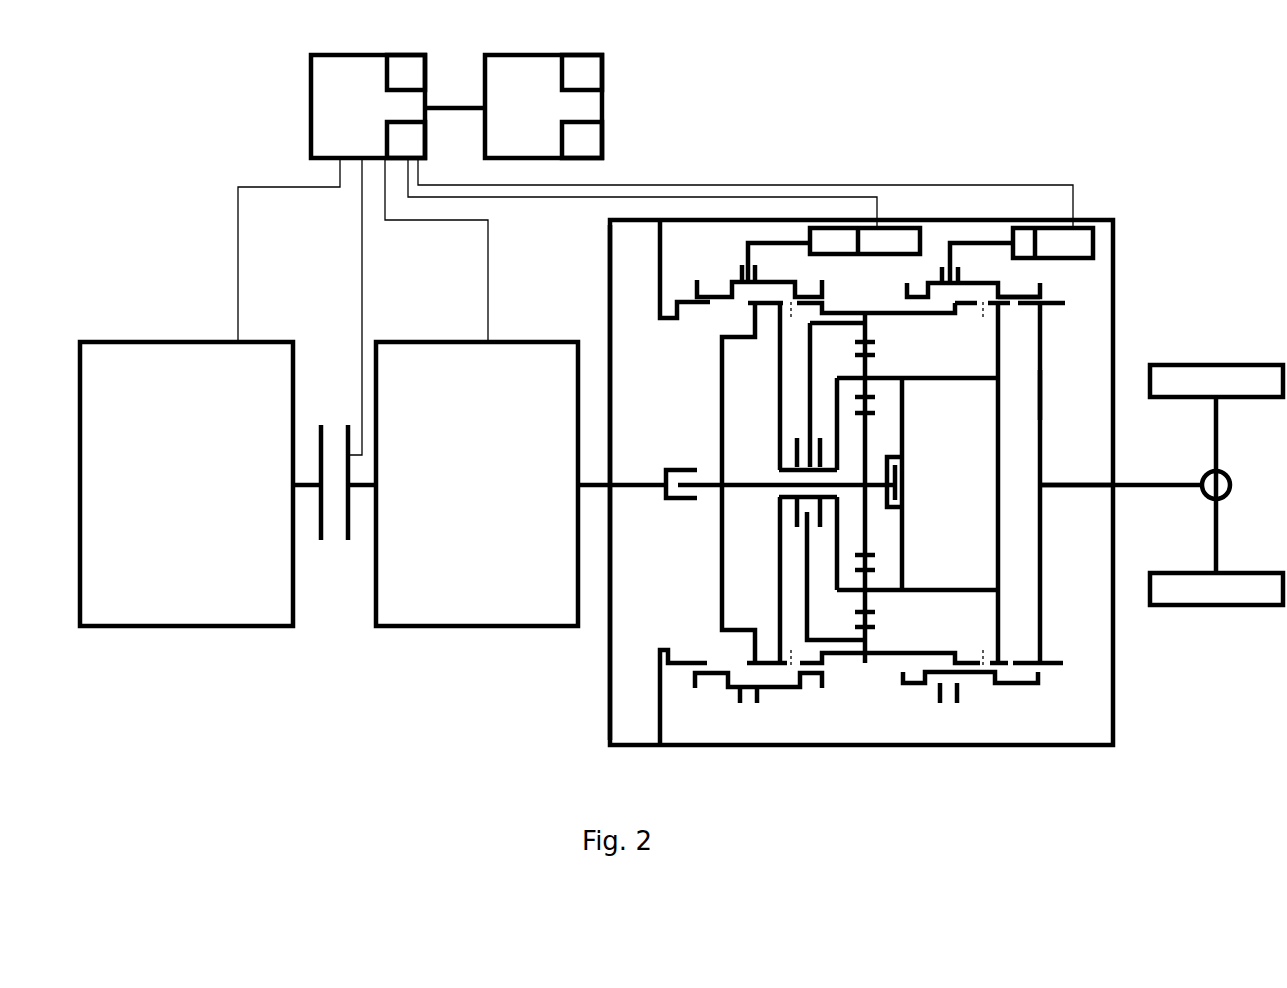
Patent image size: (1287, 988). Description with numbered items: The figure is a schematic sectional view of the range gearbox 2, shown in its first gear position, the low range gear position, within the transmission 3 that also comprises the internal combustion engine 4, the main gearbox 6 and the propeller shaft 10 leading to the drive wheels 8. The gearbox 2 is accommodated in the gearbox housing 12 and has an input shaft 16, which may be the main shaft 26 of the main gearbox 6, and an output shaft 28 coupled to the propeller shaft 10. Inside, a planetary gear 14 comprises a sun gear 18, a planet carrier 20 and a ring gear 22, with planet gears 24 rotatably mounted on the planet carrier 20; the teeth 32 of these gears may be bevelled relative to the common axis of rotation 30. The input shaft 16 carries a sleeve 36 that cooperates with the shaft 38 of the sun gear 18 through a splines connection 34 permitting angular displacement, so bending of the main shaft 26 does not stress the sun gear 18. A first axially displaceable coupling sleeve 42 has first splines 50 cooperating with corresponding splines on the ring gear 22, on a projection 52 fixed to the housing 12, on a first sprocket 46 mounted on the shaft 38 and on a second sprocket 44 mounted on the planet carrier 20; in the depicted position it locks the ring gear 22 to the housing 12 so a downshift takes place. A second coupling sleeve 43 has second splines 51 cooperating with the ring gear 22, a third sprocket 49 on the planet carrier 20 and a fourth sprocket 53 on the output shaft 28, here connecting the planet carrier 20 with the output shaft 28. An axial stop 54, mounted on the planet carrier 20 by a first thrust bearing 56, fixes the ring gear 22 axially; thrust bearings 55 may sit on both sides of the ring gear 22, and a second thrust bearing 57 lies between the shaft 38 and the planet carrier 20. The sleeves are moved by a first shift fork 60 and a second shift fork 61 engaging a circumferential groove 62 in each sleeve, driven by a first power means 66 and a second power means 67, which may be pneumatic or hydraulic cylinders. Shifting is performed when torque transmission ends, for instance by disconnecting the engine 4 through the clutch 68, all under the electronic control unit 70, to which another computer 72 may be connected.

The gearbox 2 is at (890, 150).
The transmission 3 is at (150, 268).
The internal combustion engine 4 is at (181, 628).
The main gearbox 6 is at (476, 628).
The drive wheels 8 is at (1222, 365).
The propeller shaft 10 is at (1128, 485).
The gearbox housing 12 is at (997, 218).
The planetary gear 14 is at (948, 528).
The input shaft 16 is at (597, 490).
The sun gear 18 is at (870, 520).
The planet carrier 20 is at (1002, 395).
The ring gear 22 is at (872, 318).
The planet gears 24 is at (906, 382).
The main shaft 26 is at (606, 470).
The output shaft 28 is at (1092, 487).
The axis of rotation 30 is at (845, 482).
The teeth 32 is at (885, 560).
The splines connection 34 is at (668, 468).
The sleeve 36 is at (662, 490).
The shaft of the sun gear 38 is at (716, 489).
The first axially displaceable coupling sleeve 42 is at (790, 283).
The second axially displaceable coupling sleeve 43 is at (1042, 292).
The second sprocket 44 is at (778, 378).
The first sprocket 46 is at (722, 580).
The third sprocket 49 is at (1043, 352).
The first splines 50 is at (823, 670).
The second splines 51 is at (1012, 662).
The projection 52 is at (660, 292).
The fourth sprocket 53 is at (1043, 380).
The axial stop 54 is at (834, 368).
The thrust bearings 55 is at (792, 308).
The first thrust bearing 56 is at (800, 522).
The second thrust bearing 57 is at (902, 460).
The first shift fork 60 is at (748, 260).
The second shift fork 61 is at (948, 265).
The circumferential groove 62 is at (750, 700).
The first power means 66 is at (893, 228).
The second power means 67 is at (1095, 248).
The clutch 68 is at (327, 540).
The electronic control unit 70 is at (311, 78).
The computer 72 is at (604, 105).